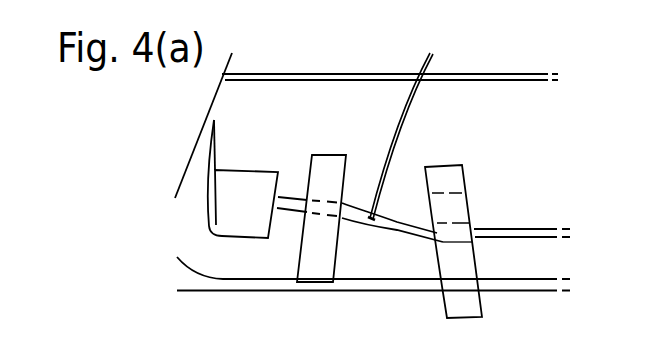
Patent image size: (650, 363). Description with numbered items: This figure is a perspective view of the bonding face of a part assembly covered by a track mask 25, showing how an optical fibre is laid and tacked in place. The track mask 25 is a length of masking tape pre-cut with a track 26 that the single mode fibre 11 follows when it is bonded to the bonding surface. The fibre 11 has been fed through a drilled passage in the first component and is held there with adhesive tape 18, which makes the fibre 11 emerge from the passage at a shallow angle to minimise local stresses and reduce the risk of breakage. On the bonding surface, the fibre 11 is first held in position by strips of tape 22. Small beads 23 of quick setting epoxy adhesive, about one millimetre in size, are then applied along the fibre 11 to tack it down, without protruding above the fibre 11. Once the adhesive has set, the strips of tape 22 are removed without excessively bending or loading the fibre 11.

The single mode fibre 11 is at (363, 203).
The adhesive tape 18 is at (253, 182).
The strips of tape 22 is at (313, 250).
The beads of quick setting epoxy adhesive 23 is at (373, 223).
The track mask 25 is at (512, 143).
The track 26 is at (434, 238).